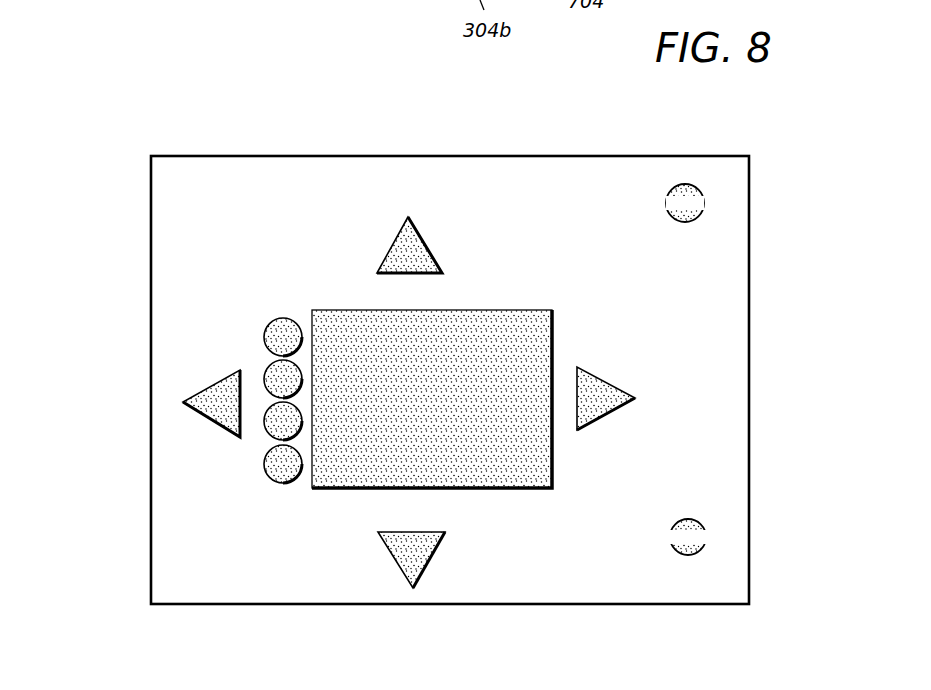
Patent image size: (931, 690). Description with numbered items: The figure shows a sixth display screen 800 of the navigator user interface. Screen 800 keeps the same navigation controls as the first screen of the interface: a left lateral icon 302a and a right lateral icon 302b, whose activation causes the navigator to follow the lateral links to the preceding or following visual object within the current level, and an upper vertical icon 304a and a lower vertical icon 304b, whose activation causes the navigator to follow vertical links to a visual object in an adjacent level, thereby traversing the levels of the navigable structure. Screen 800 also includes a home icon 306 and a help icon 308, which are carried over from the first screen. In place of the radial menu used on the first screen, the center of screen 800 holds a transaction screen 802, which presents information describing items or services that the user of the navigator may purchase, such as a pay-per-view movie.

The sixth display screen 800 is at (116, 106).
The transaction screen 802 is at (265, 330).
The left lateral icon 302a is at (196, 392).
The right lateral icon 302b is at (615, 382).
The upper vertical icon 304a is at (393, 240).
The lower vertical icon 304b is at (427, 565).
The home icon 306 is at (697, 518).
The help icon 308 is at (690, 185).